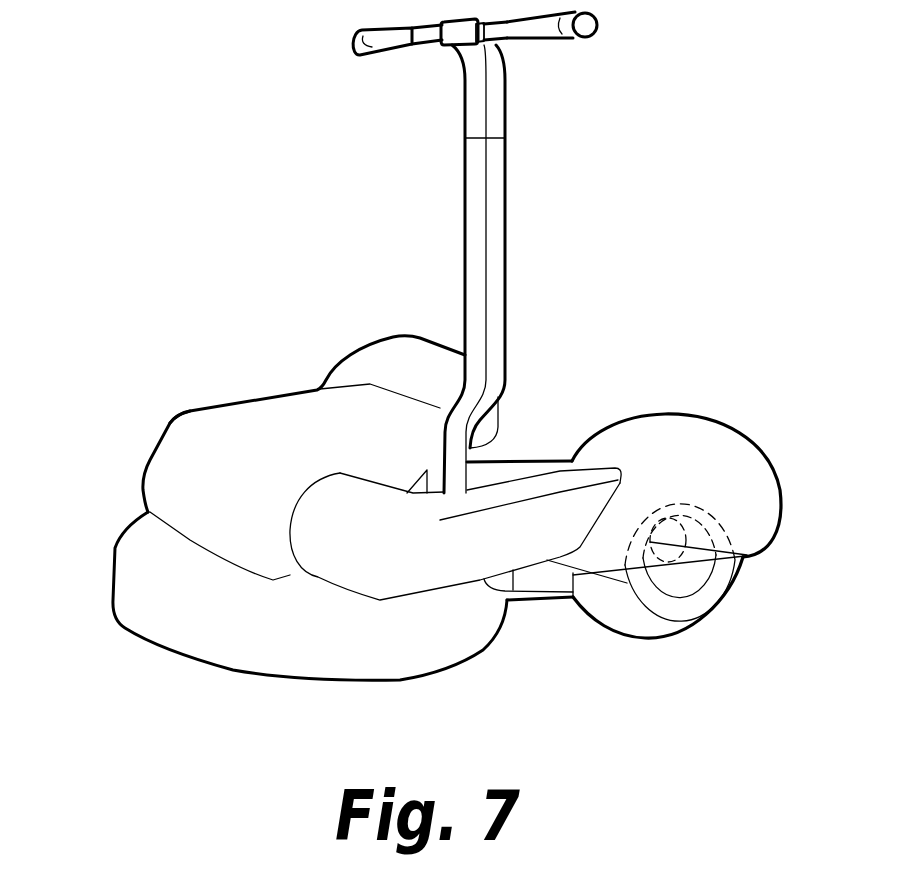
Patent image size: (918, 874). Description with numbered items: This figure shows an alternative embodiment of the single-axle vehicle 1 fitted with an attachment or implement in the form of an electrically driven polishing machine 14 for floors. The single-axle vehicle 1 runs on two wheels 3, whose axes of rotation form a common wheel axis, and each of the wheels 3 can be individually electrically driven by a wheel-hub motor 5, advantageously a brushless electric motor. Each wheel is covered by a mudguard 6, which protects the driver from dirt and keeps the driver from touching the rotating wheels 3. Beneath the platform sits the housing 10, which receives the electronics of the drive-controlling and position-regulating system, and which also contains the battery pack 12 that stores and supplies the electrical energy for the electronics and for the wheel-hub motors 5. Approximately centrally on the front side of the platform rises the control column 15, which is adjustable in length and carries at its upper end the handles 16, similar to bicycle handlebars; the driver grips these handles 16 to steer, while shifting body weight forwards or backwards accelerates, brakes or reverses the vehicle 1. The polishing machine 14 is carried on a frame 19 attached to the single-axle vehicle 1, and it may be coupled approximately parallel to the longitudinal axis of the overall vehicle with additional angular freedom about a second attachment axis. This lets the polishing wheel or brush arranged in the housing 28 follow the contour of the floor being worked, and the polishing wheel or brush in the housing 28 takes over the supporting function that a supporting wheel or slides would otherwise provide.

The single-axle vehicle 1 is at (669, 338).
The wheels 3 is at (647, 628).
The wheel-hub motors 5 is at (747, 555).
The mudguard 6 is at (697, 442).
The housing 10 is at (614, 616).
The battery pack 12 is at (538, 587).
The polishing machine 14 is at (126, 667).
The control column 15 is at (467, 187).
The handles 16 is at (367, 54).
The frame 19 is at (420, 580).
The housing 28 is at (235, 657).